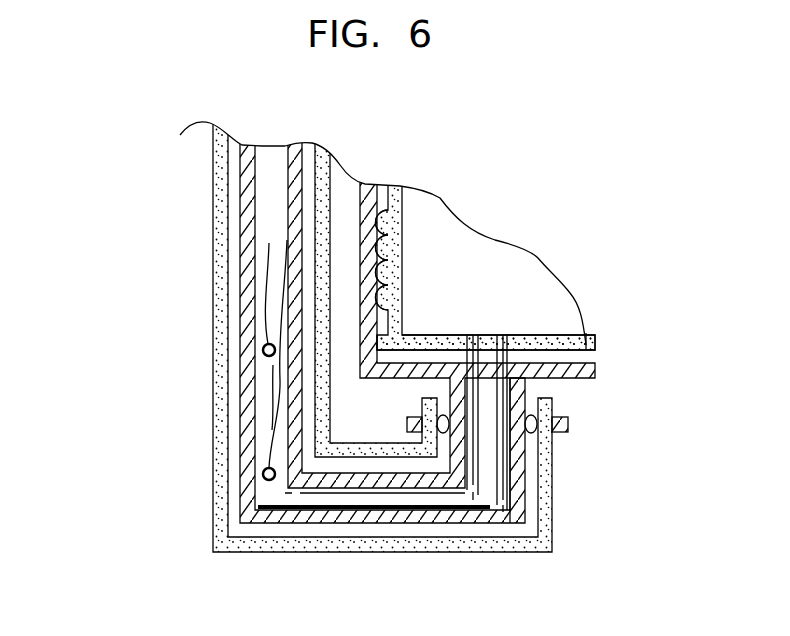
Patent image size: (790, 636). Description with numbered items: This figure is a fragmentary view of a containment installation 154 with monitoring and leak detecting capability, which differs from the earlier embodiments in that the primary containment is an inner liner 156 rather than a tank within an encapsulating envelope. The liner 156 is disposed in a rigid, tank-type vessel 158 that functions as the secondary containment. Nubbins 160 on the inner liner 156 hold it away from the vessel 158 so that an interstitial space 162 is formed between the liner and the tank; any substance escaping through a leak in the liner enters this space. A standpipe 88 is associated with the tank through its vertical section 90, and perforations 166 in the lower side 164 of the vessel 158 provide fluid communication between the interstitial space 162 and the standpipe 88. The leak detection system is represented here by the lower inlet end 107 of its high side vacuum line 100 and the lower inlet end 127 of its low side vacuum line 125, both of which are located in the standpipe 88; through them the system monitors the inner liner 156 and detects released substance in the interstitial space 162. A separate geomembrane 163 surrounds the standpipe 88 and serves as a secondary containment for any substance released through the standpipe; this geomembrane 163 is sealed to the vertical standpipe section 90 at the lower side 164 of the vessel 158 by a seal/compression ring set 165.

The standpipe 88 is at (228, 188).
The vertical section 90 is at (527, 383).
The high side vacuum line 100 is at (258, 281).
The inlet end of high side vacuum line 107 is at (262, 350).
The low side vacuum line 125 is at (258, 428).
The inlet end of low side vacuum line 127 is at (262, 475).
The containment installation 154 is at (158, 383).
The inner liner 156 is at (418, 272).
The tank-type vessel 158 is at (592, 352).
The nubbins 160 is at (388, 245).
The interstitial space 162 is at (418, 347).
The geomembrane 163 is at (434, 560).
The lower side of secondary containment vessel 164 is at (593, 385).
The seal/compression ring set 165 is at (569, 446).
The perforations 166 is at (483, 335).